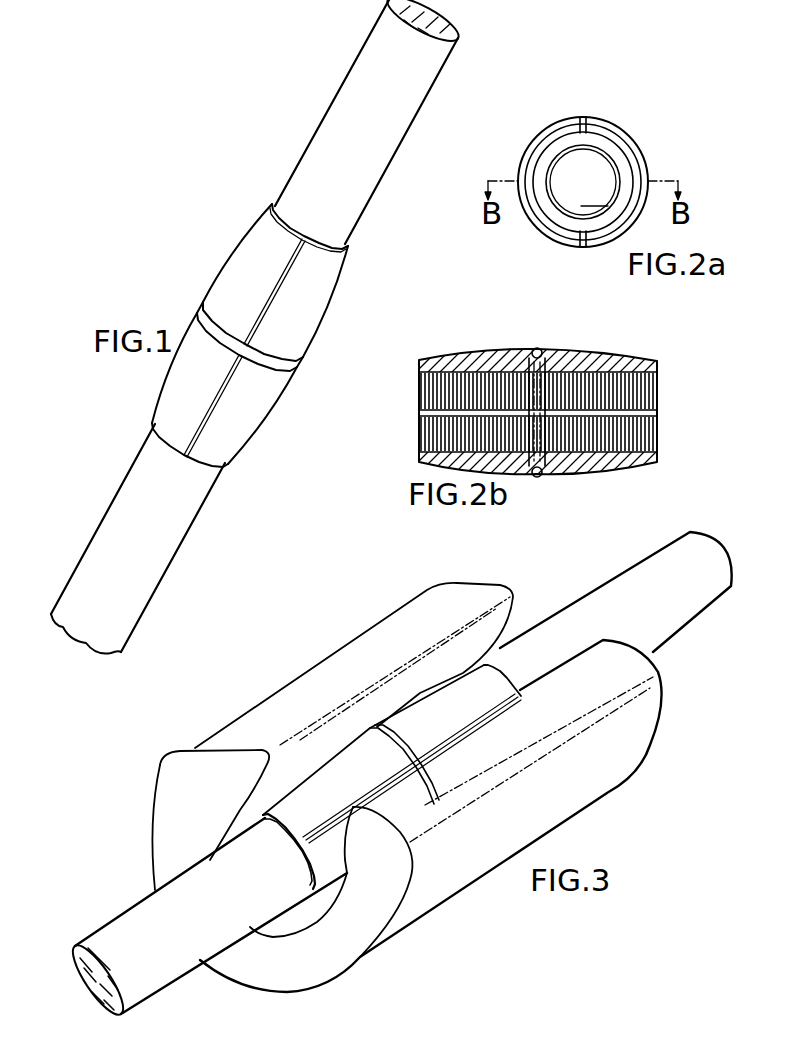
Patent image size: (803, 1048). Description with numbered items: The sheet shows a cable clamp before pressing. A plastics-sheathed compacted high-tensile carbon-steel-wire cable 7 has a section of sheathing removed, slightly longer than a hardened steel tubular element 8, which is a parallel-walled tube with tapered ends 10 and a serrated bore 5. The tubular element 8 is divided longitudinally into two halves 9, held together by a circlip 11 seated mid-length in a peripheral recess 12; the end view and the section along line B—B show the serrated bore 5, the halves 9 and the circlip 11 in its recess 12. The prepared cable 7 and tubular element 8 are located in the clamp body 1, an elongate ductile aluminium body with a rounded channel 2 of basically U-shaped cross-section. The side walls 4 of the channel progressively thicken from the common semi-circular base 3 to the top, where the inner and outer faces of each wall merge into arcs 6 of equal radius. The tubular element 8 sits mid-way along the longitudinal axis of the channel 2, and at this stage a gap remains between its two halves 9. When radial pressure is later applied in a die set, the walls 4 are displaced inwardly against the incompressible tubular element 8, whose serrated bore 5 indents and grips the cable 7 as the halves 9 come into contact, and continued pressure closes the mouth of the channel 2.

In FIG. 3, the clamp body 1 is at (395, 805).
In FIG. 3, the rounded channel 2 is at (272, 923).
In FIG. 3, the semi-circular base 3 is at (245, 960).
In FIG. 3, the side walls 4 is at (193, 820).
In FIG. 2A, the serrated bore 5 is at (581, 206).
In FIG. 2B, the serrated bore 5 is at (637, 382).
In FIG. 3, the arcs 6 is at (295, 710).
In FIG. 1, the cable 7 is at (140, 483).
In FIG. 3, the cable 7 is at (145, 918).
In FIG. 1, the tubular element 8 is at (243, 353).
In FIG. 2A, the tubular element 8 is at (595, 171).
In FIG. 2B, the tubular element 8 is at (547, 415).
In FIG. 3, the tubular element 8 is at (375, 742).
In FIG. 1, the halves 9 is at (250, 408).
In FIG. 2A, the halves 9 is at (540, 168).
In FIG. 2B, the halves 9 is at (470, 357).
In FIG. 3, the halves 9 is at (330, 862).
In FIG. 1, the tapered ends 10 is at (315, 308).
In FIG. 2A, the tapered ends 10 is at (552, 140).
In FIG. 2B, the tapered ends 10 is at (428, 360).
In FIG. 3, the tapered ends 10 is at (300, 800).
In FIG. 1, the circlip 11 is at (283, 360).
In FIG. 2A, the circlip 11 is at (585, 123).
In FIG. 2B, the circlip 11 is at (532, 349).
In FIG. 3, the circlip 11 is at (383, 727).
In FIG. 1, the peripheral recess 12 is at (208, 300).
In FIG. 2B, the peripheral recess 12 is at (538, 475).
In FIG. 3, the peripheral recess 12 is at (404, 764).